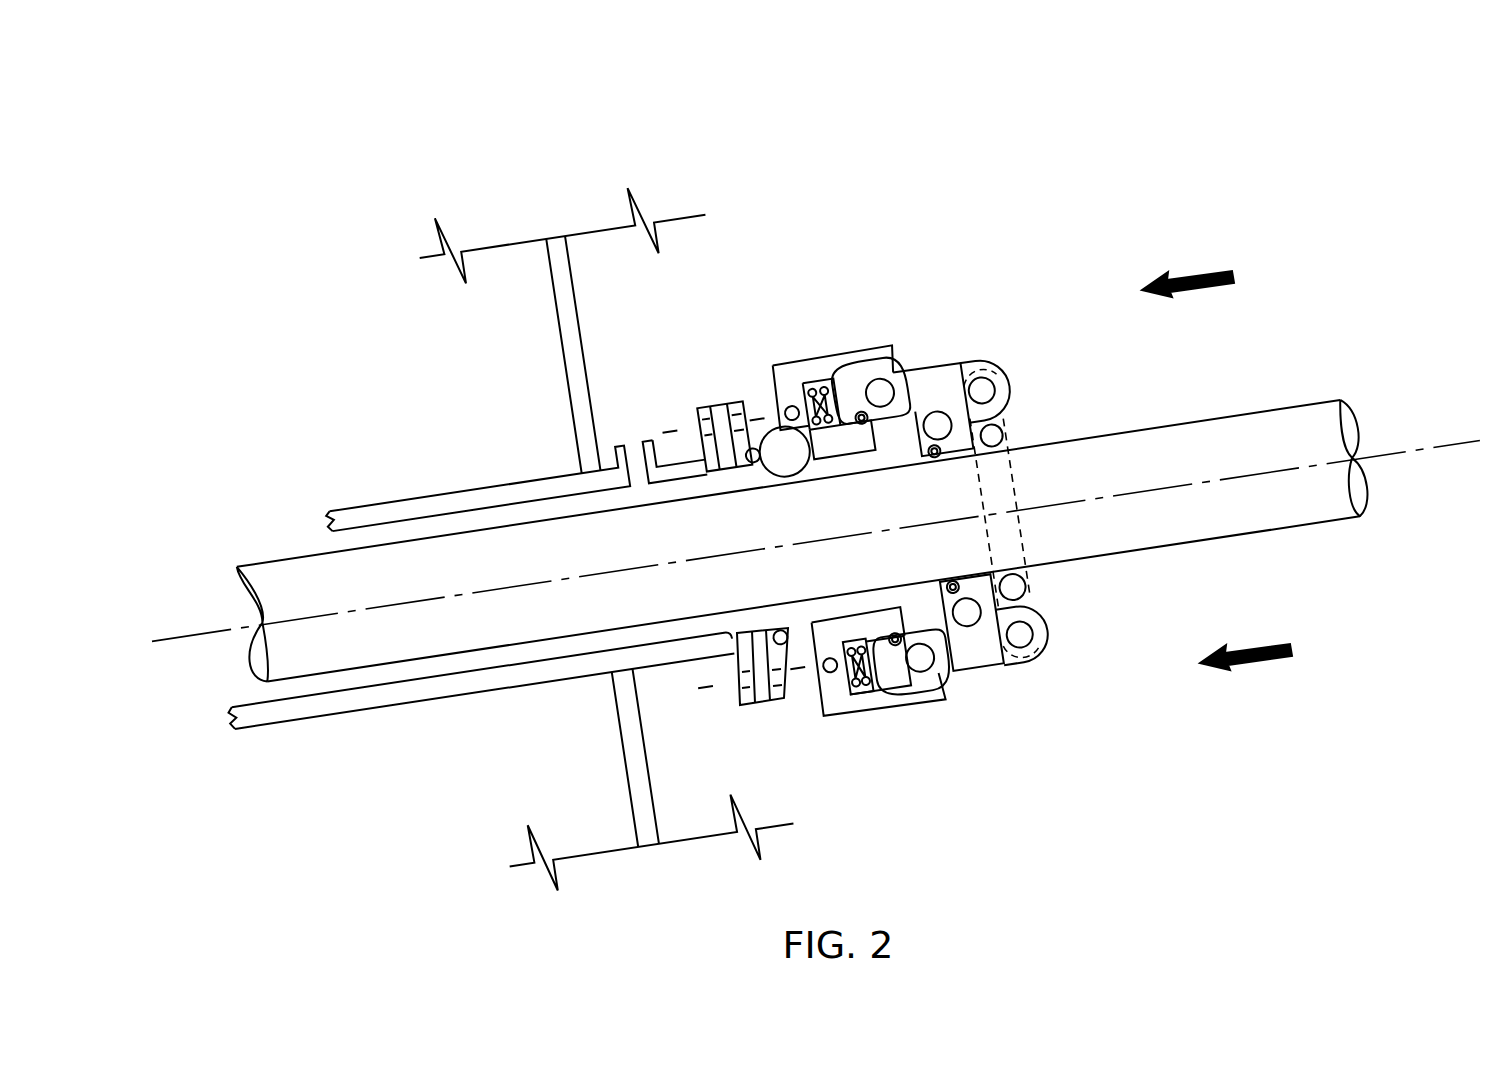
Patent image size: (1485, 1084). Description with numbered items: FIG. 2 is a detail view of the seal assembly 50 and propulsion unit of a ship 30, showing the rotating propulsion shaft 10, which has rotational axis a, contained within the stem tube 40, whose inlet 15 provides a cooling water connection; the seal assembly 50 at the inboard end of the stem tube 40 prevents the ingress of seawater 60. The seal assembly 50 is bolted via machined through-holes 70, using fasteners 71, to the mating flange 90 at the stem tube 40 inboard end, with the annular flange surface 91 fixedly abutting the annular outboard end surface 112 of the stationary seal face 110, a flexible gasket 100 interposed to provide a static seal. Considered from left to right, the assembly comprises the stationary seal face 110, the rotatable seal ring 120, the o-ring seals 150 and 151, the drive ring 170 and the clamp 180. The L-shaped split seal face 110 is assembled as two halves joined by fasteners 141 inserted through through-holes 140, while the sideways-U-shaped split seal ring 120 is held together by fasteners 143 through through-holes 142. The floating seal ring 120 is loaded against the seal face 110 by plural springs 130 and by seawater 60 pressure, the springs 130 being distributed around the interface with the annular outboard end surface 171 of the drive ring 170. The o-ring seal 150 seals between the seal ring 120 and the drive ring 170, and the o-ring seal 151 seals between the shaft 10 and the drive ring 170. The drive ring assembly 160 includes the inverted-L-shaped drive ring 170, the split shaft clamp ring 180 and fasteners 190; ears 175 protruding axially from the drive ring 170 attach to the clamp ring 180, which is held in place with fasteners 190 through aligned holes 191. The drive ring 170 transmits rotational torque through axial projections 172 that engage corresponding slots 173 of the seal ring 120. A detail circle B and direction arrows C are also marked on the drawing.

The propulsion shaft 10 is at (288, 578).
The rotational axis a is at (1428, 455).
The inlet 15 is at (633, 450).
The ship 30 is at (615, 800).
The stem tube 40 is at (372, 710).
The seal assembly 50 is at (1050, 287).
The seawater 60 is at (905, 662).
The through-holes 70 is at (700, 462).
The fasteners 71 is at (720, 690).
The mating flange 90 is at (700, 440).
The annular flange surface 91 is at (740, 622).
The gasket 100 is at (712, 425).
The stationary seal face 110 is at (718, 400).
The annular outboard end surface 112 is at (775, 622).
The rotatable seal ring 120 is at (845, 720).
The springs 130 is at (875, 692).
The through-holes 140 is at (778, 665).
The fasteners 141 is at (790, 697).
The through-holes 142 is at (787, 400).
The fasteners 143 is at (833, 324).
The o-ring seal 150 is at (925, 355).
The o-ring seal 151 is at (940, 400).
The drive ring assembly 160 is at (985, 660).
The drive ring 170 is at (980, 668).
The annular outboard end surface 171 is at (820, 395).
The axial projections 172 is at (912, 690).
The slots 173 is at (885, 378).
The ears 175 is at (1040, 650).
The split shaft clamp ring 180 is at (1010, 445).
The fasteners 190 is at (1027, 632).
The holes 191 is at (1094, 600).
The detail circle B is at (772, 428).
The direction arrow C is at (1202, 473).